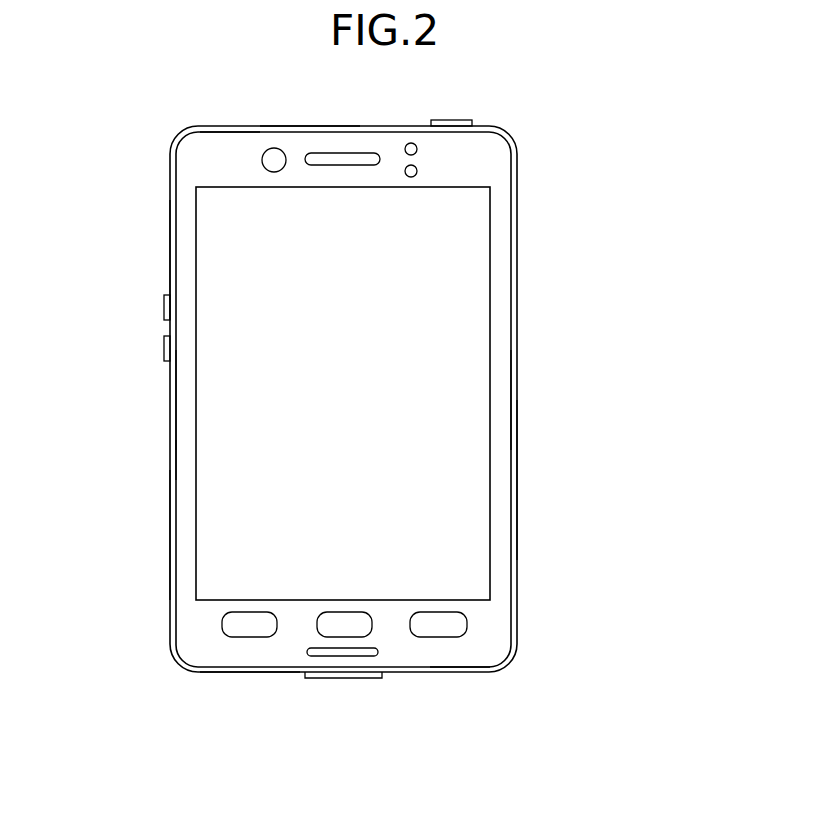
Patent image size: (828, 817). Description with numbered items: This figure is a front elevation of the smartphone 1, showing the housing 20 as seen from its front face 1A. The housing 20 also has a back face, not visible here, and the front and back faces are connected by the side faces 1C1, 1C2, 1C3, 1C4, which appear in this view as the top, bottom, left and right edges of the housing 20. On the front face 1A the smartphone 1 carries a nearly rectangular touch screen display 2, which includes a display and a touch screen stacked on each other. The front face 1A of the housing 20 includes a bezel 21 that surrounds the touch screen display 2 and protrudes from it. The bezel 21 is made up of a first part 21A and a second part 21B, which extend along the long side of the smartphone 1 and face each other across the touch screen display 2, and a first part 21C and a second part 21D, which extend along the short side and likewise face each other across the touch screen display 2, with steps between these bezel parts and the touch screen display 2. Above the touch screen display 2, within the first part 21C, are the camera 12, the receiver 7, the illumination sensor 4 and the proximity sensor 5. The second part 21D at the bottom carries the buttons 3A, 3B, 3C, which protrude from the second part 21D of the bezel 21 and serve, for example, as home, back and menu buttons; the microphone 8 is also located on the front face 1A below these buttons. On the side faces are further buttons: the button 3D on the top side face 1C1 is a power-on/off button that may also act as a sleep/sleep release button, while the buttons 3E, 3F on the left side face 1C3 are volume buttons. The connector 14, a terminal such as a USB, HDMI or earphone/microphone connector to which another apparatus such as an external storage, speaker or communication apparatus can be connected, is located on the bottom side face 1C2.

The smartphone 1 is at (490, 100).
The front face 1A is at (186, 461).
The side face 1C1 is at (307, 127).
The side face 1C2 is at (207, 673).
The side face 1C3 is at (170, 531).
The side face 1C4 is at (518, 480).
The touch screen display 2 is at (425, 345).
The button 3A is at (248, 637).
The button 3B is at (318, 622).
The button 3C is at (437, 637).
The button 3D is at (450, 120).
The button 3E is at (164, 308).
The button 3F is at (164, 348).
The illumination sensor 4 is at (411, 143).
The proximity sensor 5 is at (417, 170).
The receiver 7 is at (345, 153).
The microphone 8 is at (379, 652).
The camera 12 is at (272, 148).
The connector 14 is at (342, 678).
The housing 20 is at (170, 258).
The bezel 21 is at (487, 143).
The first part 21A is at (186, 402).
The second part 21B is at (500, 406).
The first part 21C is at (218, 163).
The second part 21D is at (489, 620).